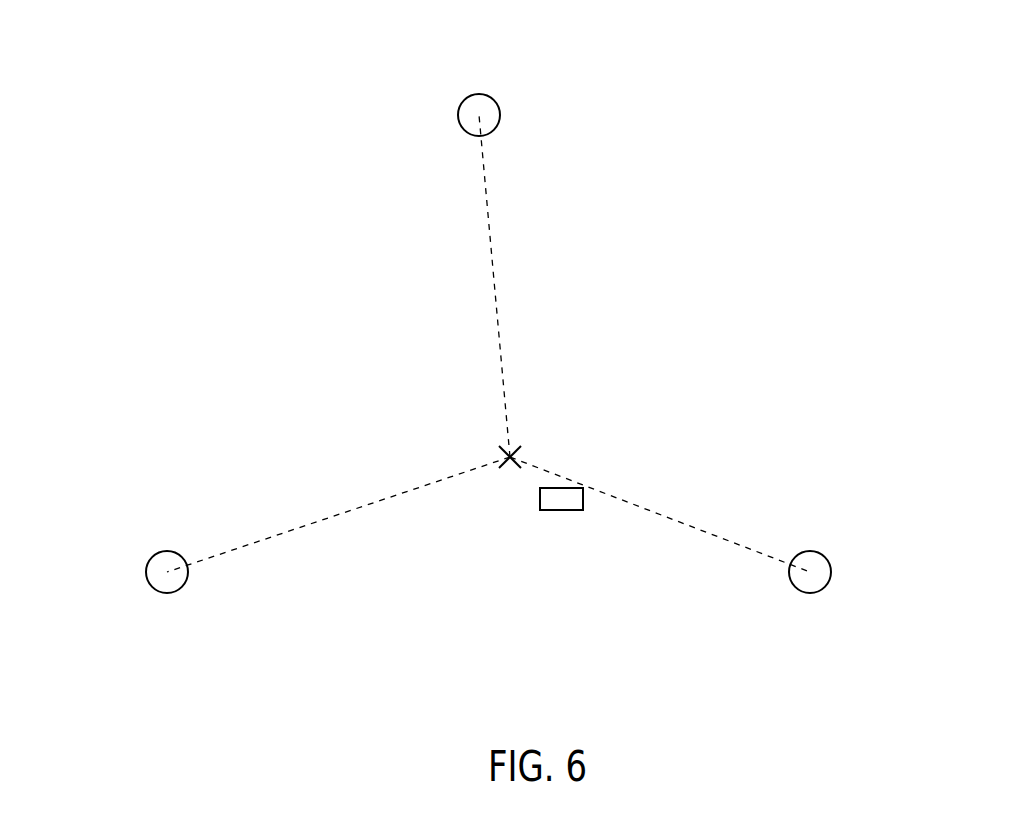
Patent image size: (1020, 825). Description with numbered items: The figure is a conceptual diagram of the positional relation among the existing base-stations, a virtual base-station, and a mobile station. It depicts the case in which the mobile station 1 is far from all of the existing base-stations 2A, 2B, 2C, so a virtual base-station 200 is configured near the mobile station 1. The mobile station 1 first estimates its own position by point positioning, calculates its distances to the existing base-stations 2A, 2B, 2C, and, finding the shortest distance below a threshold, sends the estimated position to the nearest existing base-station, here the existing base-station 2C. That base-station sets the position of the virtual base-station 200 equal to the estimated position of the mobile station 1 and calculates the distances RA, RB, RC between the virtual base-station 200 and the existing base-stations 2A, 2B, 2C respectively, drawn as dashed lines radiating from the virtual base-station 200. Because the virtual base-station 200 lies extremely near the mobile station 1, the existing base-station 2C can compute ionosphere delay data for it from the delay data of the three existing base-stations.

The mobile station 1 is at (601, 476).
The virtual base-station 200 is at (540, 436).
The existing base-station 2A is at (521, 85).
The existing base-station 2B is at (126, 544).
The existing base-station 2C is at (854, 544).
The distance between the virtual base-station and existing base-station 2A RA is at (506, 286).
The distance between the virtual base-station and existing base-station 2B RB is at (338, 514).
The distance between the virtual base-station and existing base-station 2C RC is at (660, 514).